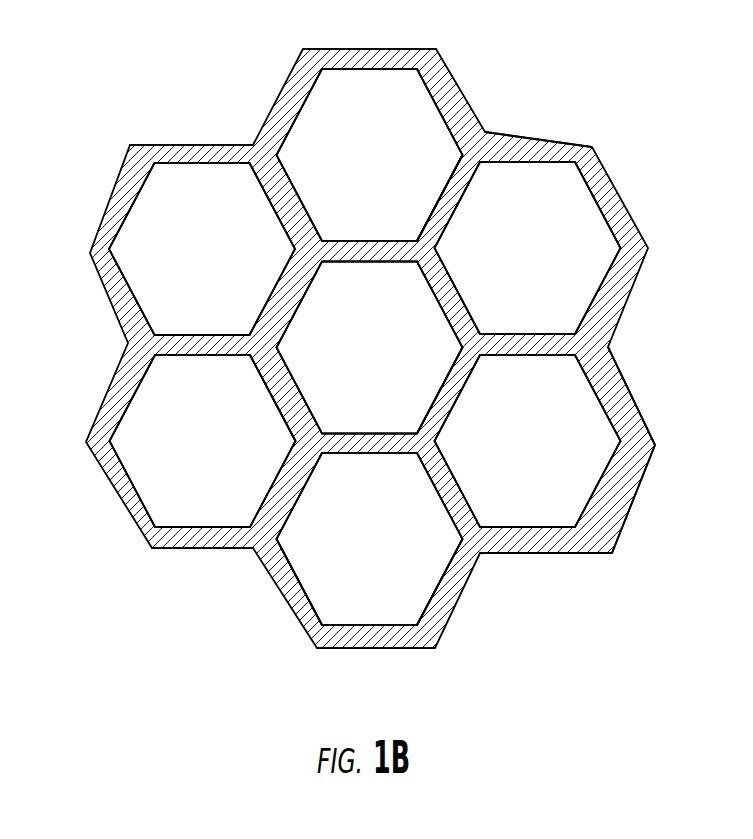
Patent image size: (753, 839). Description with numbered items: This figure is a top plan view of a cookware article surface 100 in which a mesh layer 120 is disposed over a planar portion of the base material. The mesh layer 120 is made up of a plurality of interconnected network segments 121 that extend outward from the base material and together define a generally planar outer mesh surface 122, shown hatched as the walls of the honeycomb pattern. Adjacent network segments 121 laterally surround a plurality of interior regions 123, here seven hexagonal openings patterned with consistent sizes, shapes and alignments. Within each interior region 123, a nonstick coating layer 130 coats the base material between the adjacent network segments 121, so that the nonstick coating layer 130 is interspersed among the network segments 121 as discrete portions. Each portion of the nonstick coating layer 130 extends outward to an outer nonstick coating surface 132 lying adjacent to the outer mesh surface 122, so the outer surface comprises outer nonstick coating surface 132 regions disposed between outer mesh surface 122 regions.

The cookware article surface 100 is at (170, 90).
The mesh layer 120 is at (245, 548).
The network segments 121 is at (456, 507).
The outer mesh surface 122 is at (528, 147).
The interior regions 123 is at (306, 597).
The nonstick coating layer 130 is at (388, 170).
The outer nonstick coating surface 132 is at (416, 112).